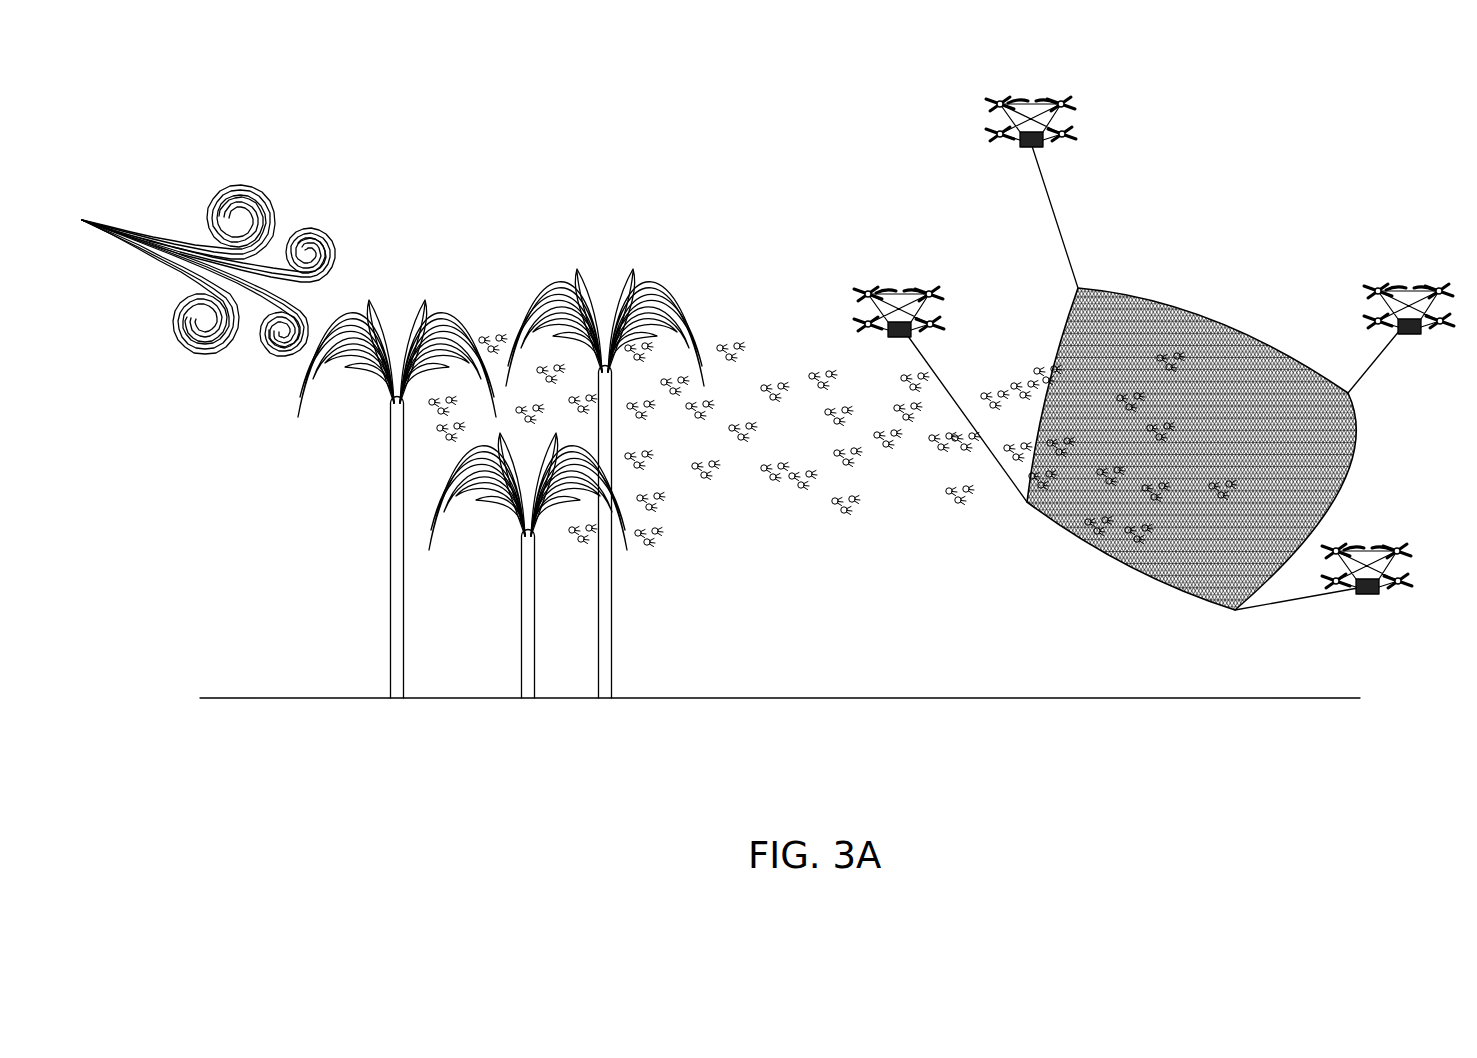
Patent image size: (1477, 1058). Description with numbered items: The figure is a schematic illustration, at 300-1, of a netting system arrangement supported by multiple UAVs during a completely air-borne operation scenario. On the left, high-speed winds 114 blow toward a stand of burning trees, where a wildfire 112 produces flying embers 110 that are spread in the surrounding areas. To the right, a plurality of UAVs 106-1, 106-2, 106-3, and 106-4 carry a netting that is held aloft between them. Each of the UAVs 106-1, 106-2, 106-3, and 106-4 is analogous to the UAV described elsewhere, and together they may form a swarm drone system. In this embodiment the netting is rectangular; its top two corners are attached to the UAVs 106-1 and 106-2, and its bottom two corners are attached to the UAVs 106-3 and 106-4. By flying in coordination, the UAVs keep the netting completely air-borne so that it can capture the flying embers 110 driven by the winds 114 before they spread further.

The netting system arrangement 300-1 is at (1182, 83).
The high-speed winds 114 is at (180, 212).
The wildfire 112 is at (445, 303).
The flying embers 110 is at (815, 368).
The UAV 106-1 is at (1033, 112).
The UAV 106-2 is at (1411, 299).
The UAV 106-3 is at (901, 302).
The UAV 106-4 is at (1369, 559).